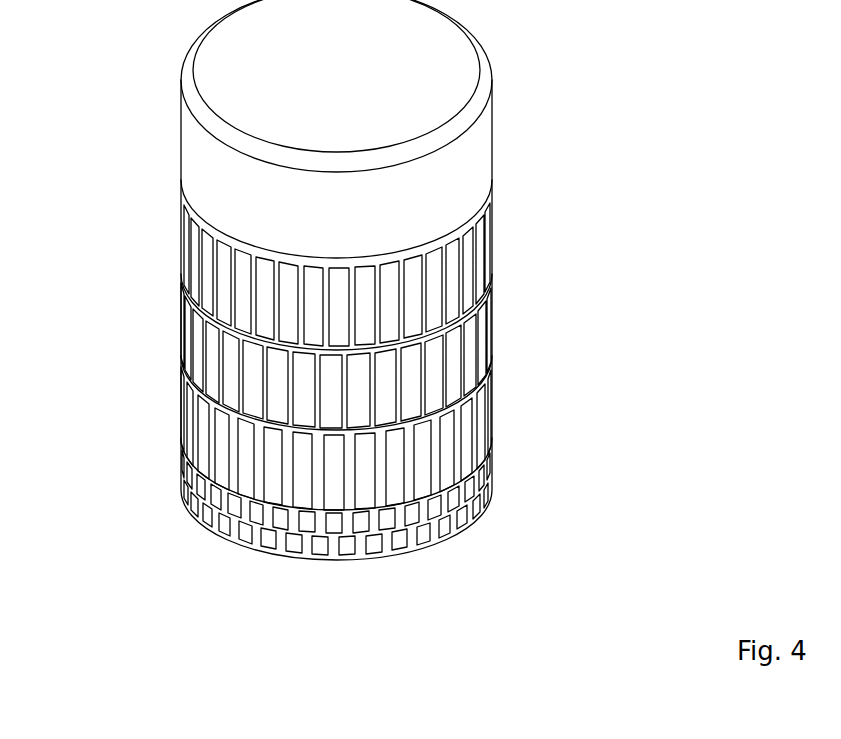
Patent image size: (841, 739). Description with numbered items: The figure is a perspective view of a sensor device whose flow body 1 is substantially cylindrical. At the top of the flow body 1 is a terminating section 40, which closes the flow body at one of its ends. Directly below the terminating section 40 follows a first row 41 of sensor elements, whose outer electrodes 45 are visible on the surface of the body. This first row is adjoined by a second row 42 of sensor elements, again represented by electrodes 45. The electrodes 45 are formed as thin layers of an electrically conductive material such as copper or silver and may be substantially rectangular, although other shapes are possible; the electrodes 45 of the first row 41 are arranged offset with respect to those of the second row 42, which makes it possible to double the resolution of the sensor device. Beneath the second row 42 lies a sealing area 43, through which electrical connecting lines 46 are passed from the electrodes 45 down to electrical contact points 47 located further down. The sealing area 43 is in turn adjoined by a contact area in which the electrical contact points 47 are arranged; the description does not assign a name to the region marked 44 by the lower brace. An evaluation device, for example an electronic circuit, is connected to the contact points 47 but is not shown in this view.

The flow body 1 is at (588, 104).
The terminating section 40 is at (500, 80).
The first row of sensor elements 41 is at (495, 233).
The second row of sensor elements 42 is at (497, 317).
The sealing area 43 is at (504, 357).
The lower band section with small openings 44 is at (504, 443).
The electrodes 45 is at (290, 277).
The electrical connecting lines 46 is at (245, 460).
The electrical contact points 47 is at (342, 548).